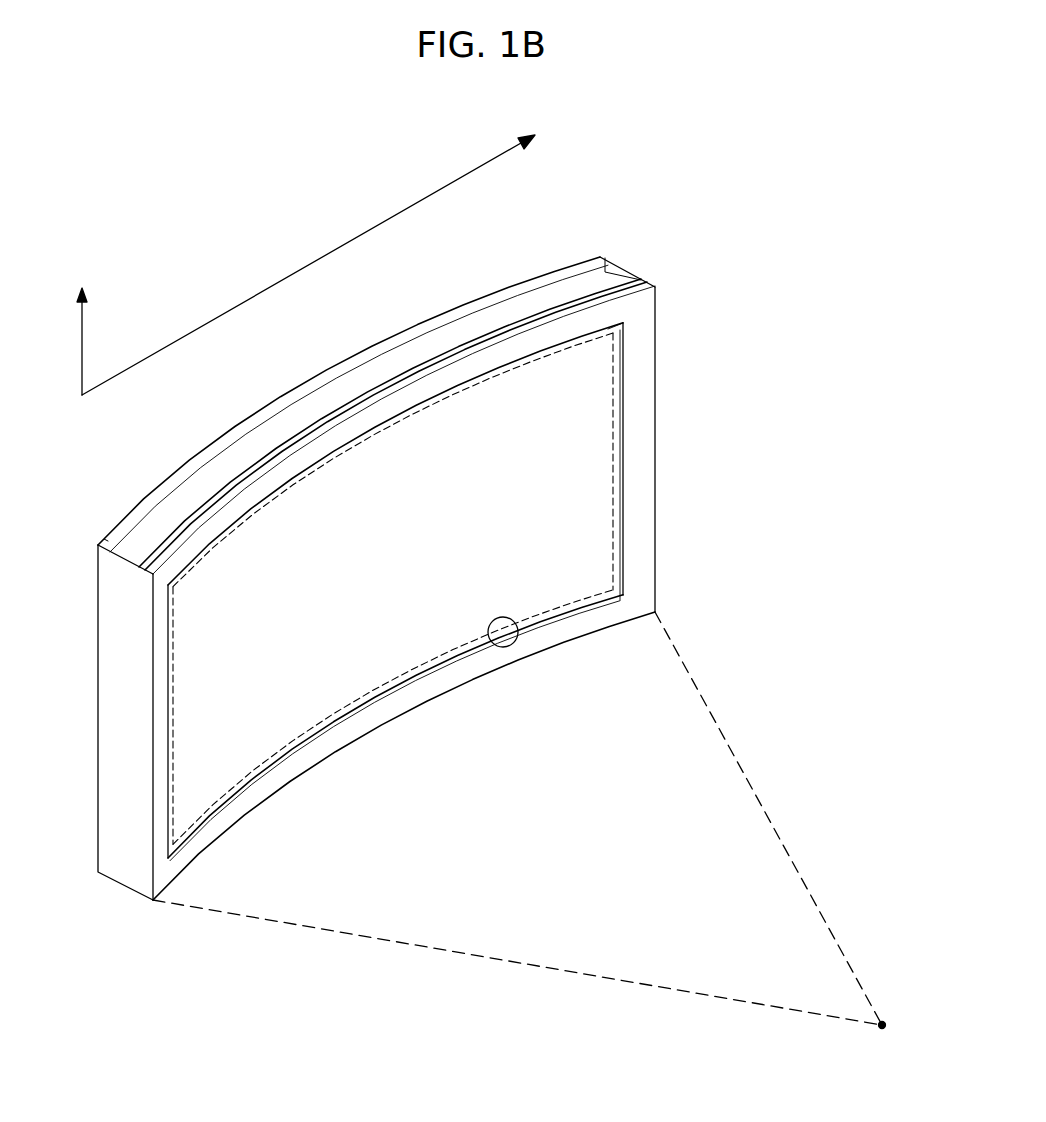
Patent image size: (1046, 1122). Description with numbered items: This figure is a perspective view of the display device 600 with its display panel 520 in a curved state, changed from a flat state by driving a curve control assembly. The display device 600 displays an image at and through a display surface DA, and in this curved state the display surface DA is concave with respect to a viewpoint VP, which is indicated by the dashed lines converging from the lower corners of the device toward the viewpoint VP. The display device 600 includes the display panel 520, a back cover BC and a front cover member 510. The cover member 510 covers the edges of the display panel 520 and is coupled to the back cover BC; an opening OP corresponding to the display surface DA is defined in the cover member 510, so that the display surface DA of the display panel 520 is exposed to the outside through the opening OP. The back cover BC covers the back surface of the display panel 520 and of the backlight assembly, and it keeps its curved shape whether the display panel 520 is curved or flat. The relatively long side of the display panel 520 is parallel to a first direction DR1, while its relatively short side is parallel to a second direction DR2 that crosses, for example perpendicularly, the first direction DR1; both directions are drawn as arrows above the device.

The display device 600 is at (684, 213).
The back cover BC is at (540, 283).
The cover member 510 is at (639, 400).
The display panel 520 is at (585, 457).
The display surface DA is at (612, 522).
The opening OP is at (517, 620).
The viewpoint VP is at (524, 835).
The first direction DR1 is at (336, 254).
The second direction DR2 is at (85, 330).